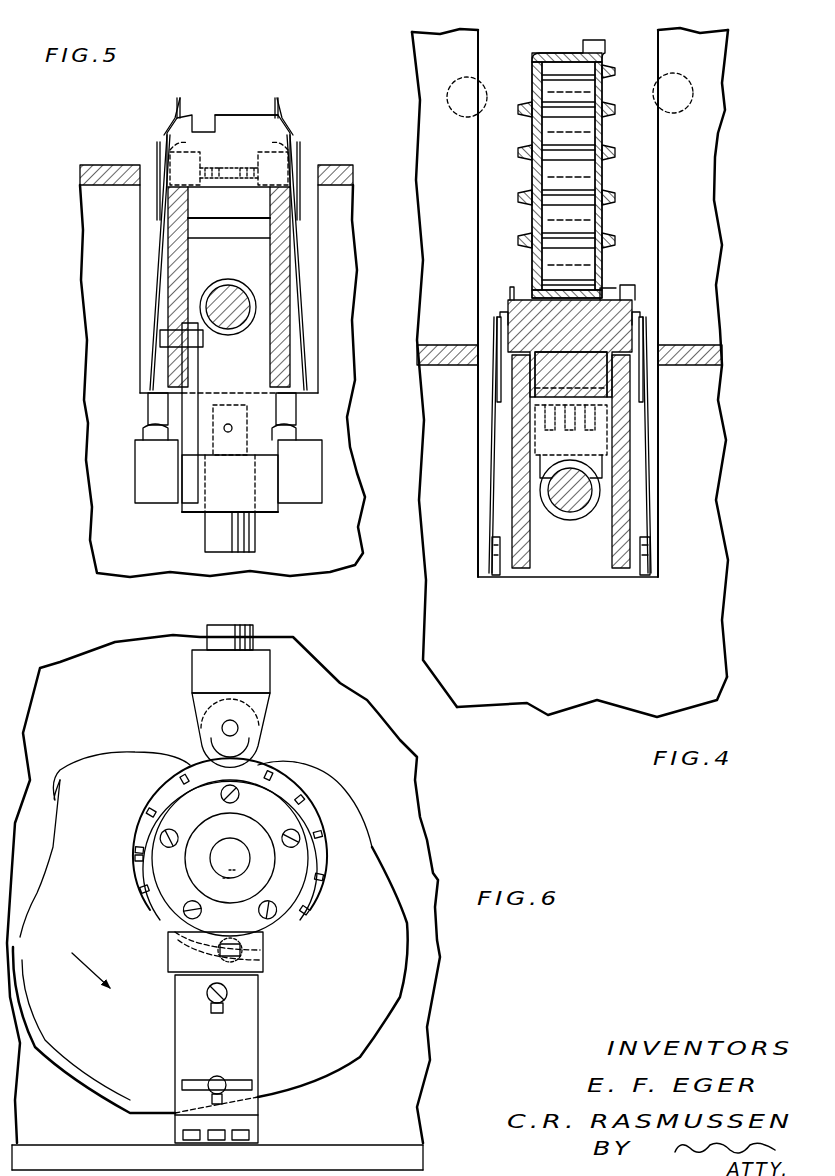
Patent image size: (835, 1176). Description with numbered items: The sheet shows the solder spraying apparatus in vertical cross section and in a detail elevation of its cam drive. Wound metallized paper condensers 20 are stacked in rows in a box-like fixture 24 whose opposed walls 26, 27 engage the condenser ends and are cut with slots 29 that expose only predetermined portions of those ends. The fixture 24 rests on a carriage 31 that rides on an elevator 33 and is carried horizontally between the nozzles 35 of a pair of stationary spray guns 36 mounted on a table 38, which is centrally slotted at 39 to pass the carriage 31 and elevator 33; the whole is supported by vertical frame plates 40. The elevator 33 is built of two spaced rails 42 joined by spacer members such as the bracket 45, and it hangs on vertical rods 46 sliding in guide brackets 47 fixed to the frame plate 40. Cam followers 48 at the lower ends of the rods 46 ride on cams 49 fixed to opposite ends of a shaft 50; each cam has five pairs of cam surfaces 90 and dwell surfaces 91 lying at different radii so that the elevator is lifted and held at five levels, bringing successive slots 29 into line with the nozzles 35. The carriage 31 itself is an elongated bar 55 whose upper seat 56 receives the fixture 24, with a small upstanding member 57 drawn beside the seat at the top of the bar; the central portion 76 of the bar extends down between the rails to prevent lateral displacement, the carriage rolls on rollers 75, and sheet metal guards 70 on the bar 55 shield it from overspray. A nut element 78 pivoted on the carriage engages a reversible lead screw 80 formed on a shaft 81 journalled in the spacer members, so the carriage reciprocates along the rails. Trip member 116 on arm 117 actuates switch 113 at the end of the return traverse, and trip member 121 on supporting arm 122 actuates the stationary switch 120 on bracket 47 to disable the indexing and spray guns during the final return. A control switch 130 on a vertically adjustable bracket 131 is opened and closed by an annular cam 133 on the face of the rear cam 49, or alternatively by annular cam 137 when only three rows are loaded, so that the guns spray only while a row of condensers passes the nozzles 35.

In FIG. 4, the condensers 20 is at (582, 130).
In FIG. 4, the fixture 24 is at (560, 50).
In FIG. 4, the opposed wall 26 is at (530, 182).
In FIG. 4, the opposed wall 27 is at (580, 175).
In FIG. 4, the slots 29 is at (530, 92).
In FIG. 5, the carriage 31 is at (238, 80).
In FIG. 4, the carriage 31 is at (640, 333).
In FIG. 5, the elevator 33 is at (150, 274).
In FIG. 4, the elevator 33 is at (640, 518).
In FIG. 4, the nozzles 35 is at (478, 80).
In FIG. 4, the spray guns 36 is at (420, 42).
In FIG. 5, the table 38 is at (85, 168).
In FIG. 4, the table 38 is at (445, 360).
In FIG. 5, the slot 39 is at (137, 170).
In FIG. 4, the slot 39 is at (483, 346).
In FIG. 5, the vertical frame plates 40 is at (100, 560).
In FIG. 4, the vertical frame plates 40 is at (520, 695).
In FIG. 6, the vertical frame plates 40 is at (88, 668).
In FIG. 5, the rails 42 is at (178, 290).
In FIG. 4, the rails 42 is at (520, 565).
In FIG. 5, the spacer member 45 is at (250, 355).
In FIG. 4, the spacer member 45 is at (568, 572).
In FIG. 5, the vertical rods 46 is at (215, 546).
In FIG. 6, the vertical rods 46 is at (215, 635).
In FIG. 5, the guide brackets 47 is at (272, 528).
In FIG. 6, the cam followers 48 is at (262, 738).
In FIG. 6, the cams 49 is at (368, 885).
In FIG. 6, the shaft 50 is at (210, 855).
In FIG. 5, the bar 55 is at (260, 128).
In FIG. 4, the bar 55 is at (536, 312).
In FIG. 5, the seat 56 is at (243, 115).
In FIG. 4, the seat 56 is at (530, 285).
In FIG. 5, the pin 57 is at (200, 122).
In FIG. 4, the pin 57 is at (628, 300).
In FIG. 5, the sheet metal guards 70 is at (168, 120).
In FIG. 4, the sheet metal guards 70 is at (505, 312).
In FIG. 5, the rollers 75 is at (165, 132).
In FIG. 5, the central portion 76 is at (222, 213).
In FIG. 4, the central portion 76 is at (585, 375).
In FIG. 4, the nut element 78 is at (600, 465).
In FIG. 4, the reversible lead screw 80 is at (598, 492).
In FIG. 5, the shaft 81 is at (220, 305).
In FIG. 6, the cam surfaces 90 is at (55, 800).
In FIG. 6, the dwell surfaces 91 is at (105, 790).
In FIG. 5, the switch 113 is at (143, 462).
In FIG. 5, the trip member 116 is at (150, 392).
In FIG. 4, the trip member 116 is at (645, 575).
In FIG. 5, the arm 117 is at (154, 280).
In FIG. 4, the arm 117 is at (645, 432).
In FIG. 5, the switch 120 is at (300, 495).
In FIG. 5, the trip member 121 is at (296, 385).
In FIG. 4, the trip member 121 is at (490, 575).
In FIG. 5, the supporting arm 122 is at (303, 280).
In FIG. 4, the supporting arm 122 is at (497, 430).
In FIG. 6, the control switch 130 is at (255, 960).
In FIG. 6, the bracket 131 is at (242, 1032).
In FIG. 6, the annular cam 133 is at (318, 830).
In FIG. 6, the annular cam 137 is at (330, 828).